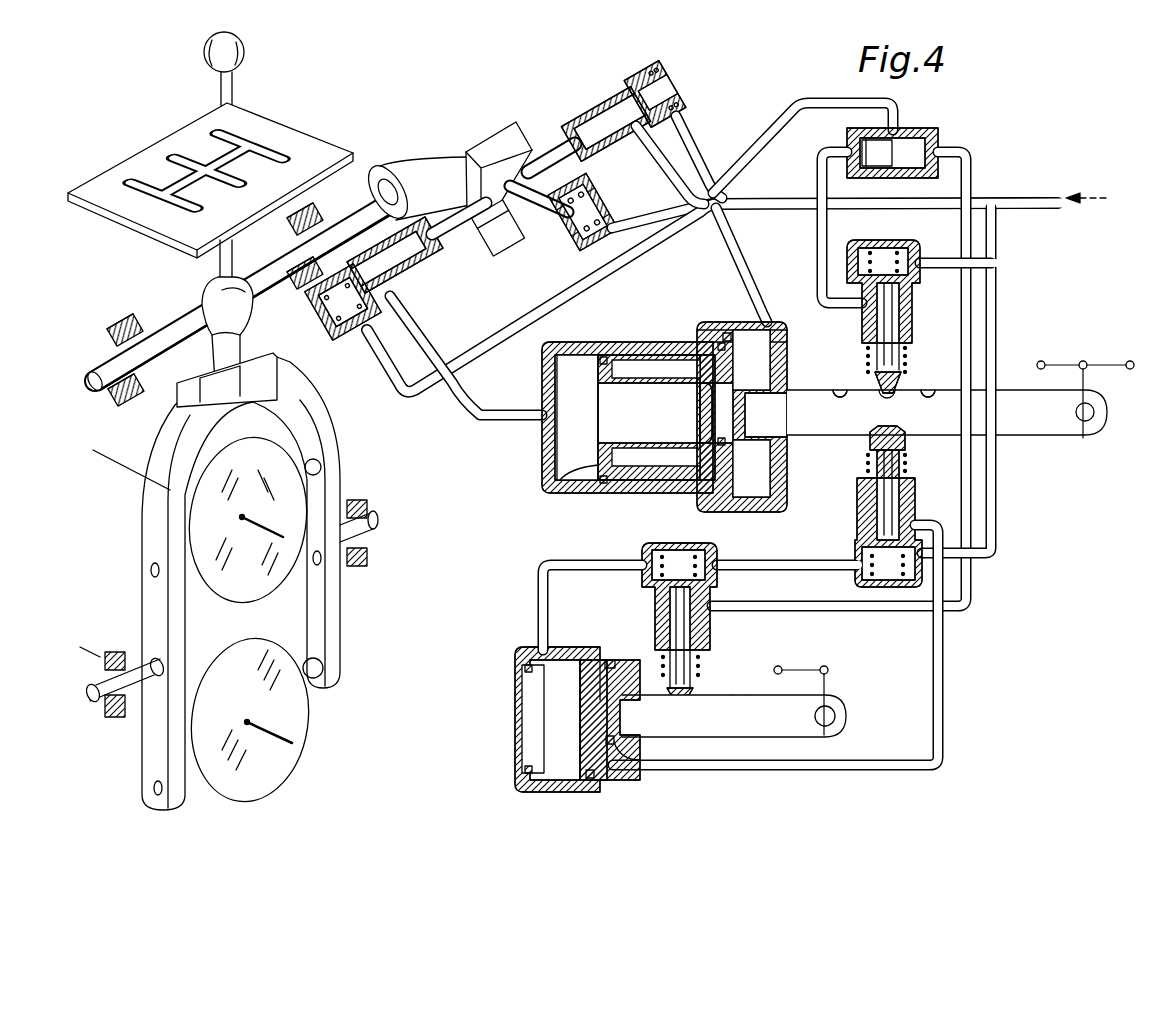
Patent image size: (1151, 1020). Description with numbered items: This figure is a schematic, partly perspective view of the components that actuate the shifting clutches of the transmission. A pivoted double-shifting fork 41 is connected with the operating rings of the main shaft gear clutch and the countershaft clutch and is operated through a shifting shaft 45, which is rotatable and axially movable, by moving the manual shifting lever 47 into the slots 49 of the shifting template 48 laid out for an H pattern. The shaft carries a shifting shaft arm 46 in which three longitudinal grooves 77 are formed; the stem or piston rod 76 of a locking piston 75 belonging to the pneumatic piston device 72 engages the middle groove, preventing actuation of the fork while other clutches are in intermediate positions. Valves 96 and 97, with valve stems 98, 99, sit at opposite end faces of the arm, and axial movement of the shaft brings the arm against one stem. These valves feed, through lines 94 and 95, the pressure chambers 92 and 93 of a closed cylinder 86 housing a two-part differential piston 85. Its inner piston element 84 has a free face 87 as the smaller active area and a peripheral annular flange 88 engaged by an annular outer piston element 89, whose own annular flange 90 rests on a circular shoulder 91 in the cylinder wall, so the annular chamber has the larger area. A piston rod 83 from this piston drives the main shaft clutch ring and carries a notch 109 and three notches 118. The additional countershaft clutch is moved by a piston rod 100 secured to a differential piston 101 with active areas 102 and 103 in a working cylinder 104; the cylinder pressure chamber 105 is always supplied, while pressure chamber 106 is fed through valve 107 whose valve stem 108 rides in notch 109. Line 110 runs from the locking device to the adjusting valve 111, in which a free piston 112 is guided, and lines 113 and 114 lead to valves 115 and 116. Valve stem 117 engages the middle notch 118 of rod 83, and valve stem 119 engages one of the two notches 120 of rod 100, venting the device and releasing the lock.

The double-shifting fork 41 is at (325, 440).
The shifting shaft 45 is at (92, 392).
The shifting shaft arm 46 is at (410, 158).
The manual shifting lever 47 is at (245, 48).
The shifting template 48 is at (226, 173).
The shift pattern slots 49 is at (250, 140).
The pneumatic piston device 72 is at (618, 234).
The locking piston 75 is at (582, 238).
The piston rod 76 is at (534, 208).
The longitudinal grooves 77 is at (468, 152).
The piston rod 83 is at (1041, 425).
The inner piston element 84 is at (750, 460).
The two-part differential piston 85 is at (760, 375).
The closed cylinder 86 is at (650, 490).
The free face 87 is at (560, 478).
The annular flange 88 is at (603, 490).
The annular outer piston element 89 is at (682, 490).
The annular flange 90 is at (730, 325).
The circular shoulder 91 is at (705, 332).
The inner piston pressure chamber 92 is at (573, 440).
The annular piston chamber 93 is at (757, 505).
The line 94 is at (486, 409).
The line 95 is at (735, 258).
The valve 96 is at (411, 282).
The valve 97 is at (590, 100).
The valve stem 98 is at (445, 242).
The valve stem 99 is at (543, 150).
The piston rod 100 is at (740, 725).
The differential piston 101 is at (590, 730).
The active area 102 is at (615, 658).
The active area 103 is at (576, 750).
The working cylinder 104 is at (580, 778).
The cylinder pressure chamber 105 is at (560, 660).
The pressure chamber 106 is at (620, 752).
The valve 107 is at (918, 490).
The valve stem 108 is at (870, 458).
The notch 109 is at (896, 430).
The line 110 is at (802, 108).
The adjusting valve 111 is at (940, 128).
The free piston 112 is at (866, 150).
The line 113 is at (970, 170).
The line 114 is at (828, 230).
The valve 115 is at (900, 238).
The valve 116 is at (640, 590).
The valve stem 117 is at (905, 378).
The notches 118 is at (844, 385).
The valve stem 119 is at (695, 688).
The notches 120 is at (710, 690).